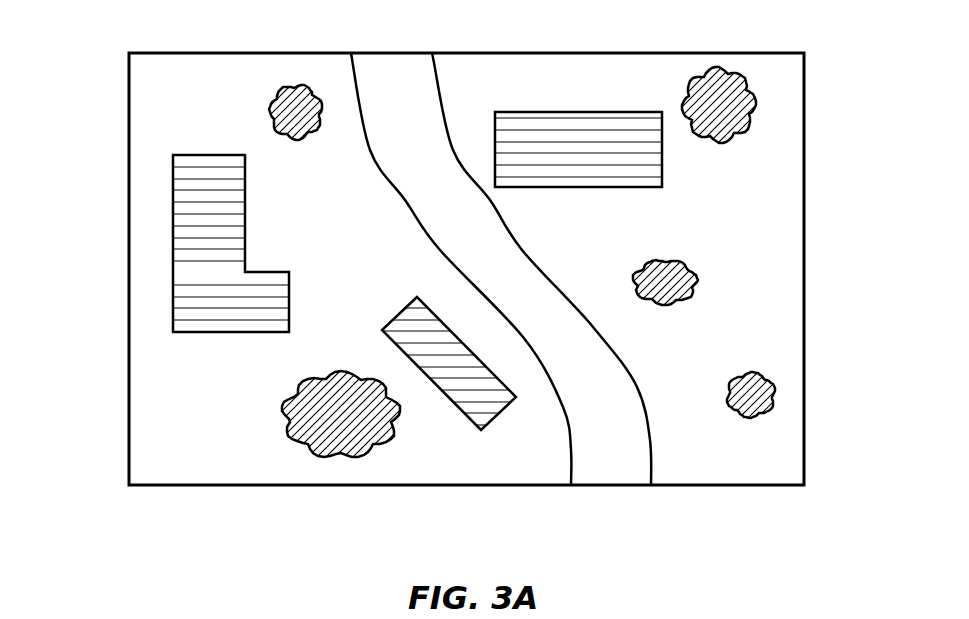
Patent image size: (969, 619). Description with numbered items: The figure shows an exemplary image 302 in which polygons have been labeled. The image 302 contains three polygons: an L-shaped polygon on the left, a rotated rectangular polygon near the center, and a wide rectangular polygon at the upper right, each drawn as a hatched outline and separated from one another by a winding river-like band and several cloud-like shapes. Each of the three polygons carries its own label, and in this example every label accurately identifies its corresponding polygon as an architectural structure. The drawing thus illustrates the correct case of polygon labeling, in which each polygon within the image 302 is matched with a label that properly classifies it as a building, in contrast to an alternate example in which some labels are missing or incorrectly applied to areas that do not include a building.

The image 302 is at (804, 93).